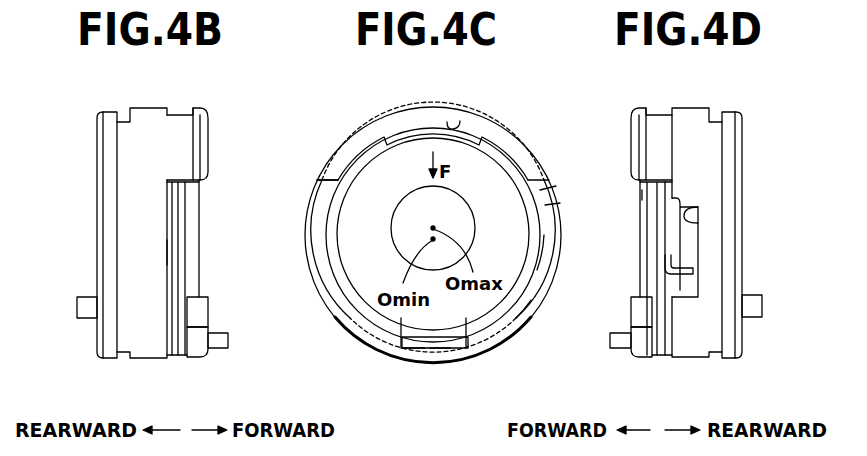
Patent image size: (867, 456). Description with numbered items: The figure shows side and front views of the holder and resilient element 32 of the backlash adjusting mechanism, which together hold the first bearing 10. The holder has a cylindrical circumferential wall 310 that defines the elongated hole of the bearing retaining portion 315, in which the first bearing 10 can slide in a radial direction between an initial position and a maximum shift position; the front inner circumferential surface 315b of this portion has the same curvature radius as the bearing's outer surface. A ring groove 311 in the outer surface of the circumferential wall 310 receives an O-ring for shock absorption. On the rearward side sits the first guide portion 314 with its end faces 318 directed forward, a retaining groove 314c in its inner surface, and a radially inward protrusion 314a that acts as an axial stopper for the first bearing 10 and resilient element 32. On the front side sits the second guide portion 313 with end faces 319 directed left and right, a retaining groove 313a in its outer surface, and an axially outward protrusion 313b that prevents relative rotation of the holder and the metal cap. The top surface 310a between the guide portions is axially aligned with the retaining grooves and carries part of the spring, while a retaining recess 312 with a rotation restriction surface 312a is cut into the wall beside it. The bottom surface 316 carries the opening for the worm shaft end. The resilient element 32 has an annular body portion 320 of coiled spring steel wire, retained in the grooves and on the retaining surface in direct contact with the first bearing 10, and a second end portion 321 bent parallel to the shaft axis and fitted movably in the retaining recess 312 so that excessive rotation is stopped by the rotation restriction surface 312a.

In FIG. 4C, the first bearing 10 is at (495, 170).
In FIG. 4C, the resilient element 32 is at (517, 302).
In FIG. 4D, the resilient element 32 is at (636, 195).
In FIG. 4B, the circumferential wall 310 is at (147, 110).
In FIG. 4D, the circumferential wall 310 is at (690, 108).
In FIG. 4B, the top surface 310a is at (170, 252).
In FIG. 4B, the ring groove 311 is at (117, 111).
In FIG. 4D, the ring groove 311 is at (721, 113).
In FIG. 4C, the retaining recess 312 is at (558, 253).
In FIG. 4D, the retaining recess 312 is at (692, 200).
In FIG. 4C, the rotation restriction surface 312a is at (558, 205).
In FIG. 4D, the rotation restriction surface 312a is at (698, 214).
In FIG. 4B, the second guide portion 313 is at (193, 358).
In FIG. 4C, the second guide portion 313 is at (470, 338).
In FIG. 4D, the second guide portion 313 is at (645, 357).
In FIG. 4B, the retaining groove 313a is at (172, 358).
In FIG. 4C, the retaining groove 313a is at (413, 352).
In FIG. 4D, the retaining groove 313a is at (665, 357).
In FIG. 4B, the protrusion 313b is at (228, 340).
In FIG. 4C, the protrusion 313b is at (440, 345).
In FIG. 4D, the protrusion 313b is at (615, 350).
In FIG. 4B, the first guide portion 314 is at (190, 143).
In FIG. 4C, the first guide portion 314 is at (443, 108).
In FIG. 4D, the first guide portion 314 is at (659, 133).
In FIG. 4C, the protrusion 314a is at (410, 128).
In FIG. 4C, the retaining groove 314c is at (447, 127).
In FIG. 4C, the bearing retaining portion 315 is at (387, 323).
In FIG. 4C, the front inner circumferential surface 315b is at (478, 330).
In FIG. 4B, the bottom surface 316 is at (97, 348).
In FIG. 4D, the bottom surface 316 is at (742, 345).
In FIG. 4B, the end faces 318 is at (318, 182).
In FIG. 4C, the end faces 318 is at (637, 183).
In FIG. 4D, the end faces 318 is at (637, 183).
In FIG. 4B, the end faces 319 is at (200, 308).
In FIG. 4D, the end faces 319 is at (637, 310).
In FIG. 4B, the body portion 320 is at (180, 218).
In FIG. 4D, the body portion 320 is at (654, 242).
In FIG. 4D, the second end portion 321 is at (692, 262).